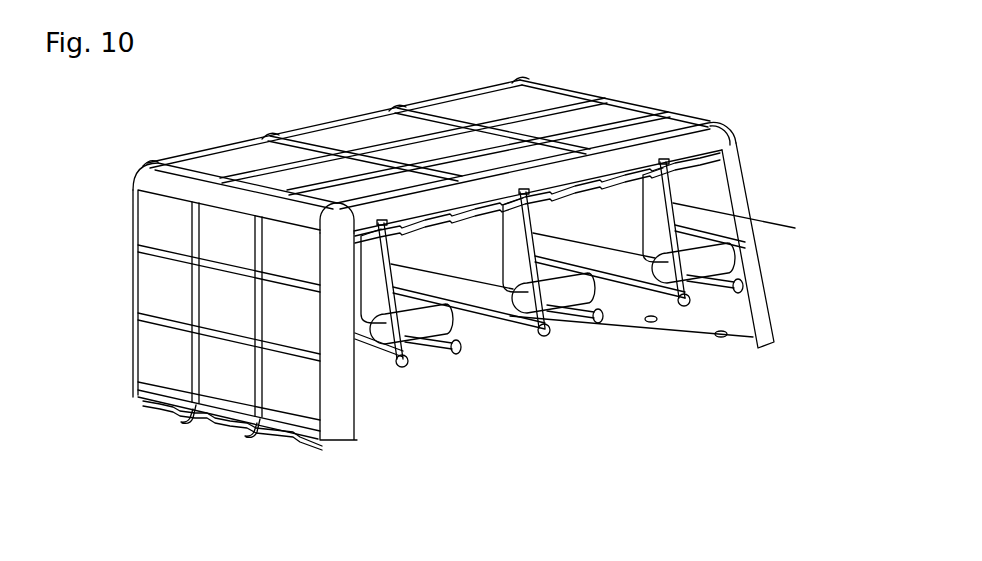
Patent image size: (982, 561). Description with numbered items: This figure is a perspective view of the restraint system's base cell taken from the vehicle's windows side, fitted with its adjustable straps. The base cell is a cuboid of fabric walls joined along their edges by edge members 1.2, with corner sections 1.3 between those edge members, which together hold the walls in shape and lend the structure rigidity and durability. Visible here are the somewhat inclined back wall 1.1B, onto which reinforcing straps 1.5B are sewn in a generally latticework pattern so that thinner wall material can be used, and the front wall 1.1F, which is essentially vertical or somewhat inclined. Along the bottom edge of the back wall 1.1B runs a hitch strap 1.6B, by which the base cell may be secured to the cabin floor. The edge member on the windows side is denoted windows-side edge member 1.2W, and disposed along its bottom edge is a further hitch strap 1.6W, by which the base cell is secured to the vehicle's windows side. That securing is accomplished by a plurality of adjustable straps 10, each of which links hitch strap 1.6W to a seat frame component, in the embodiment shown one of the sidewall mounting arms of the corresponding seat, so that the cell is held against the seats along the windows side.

The adjustable strap 10 is at (697, 221).
The edge member 1.2 is at (153, 183).
The windows-side edge member 1.2W is at (703, 137).
The corner section 1.3 is at (135, 178).
The windows-side hitch strap 1.6W is at (703, 160).
The back wall 1.1B is at (150, 363).
The back wall reinforcing strap 1.5B is at (150, 255).
The back wall hitch strap 1.6B is at (157, 402).
The front wall 1.1F is at (692, 312).